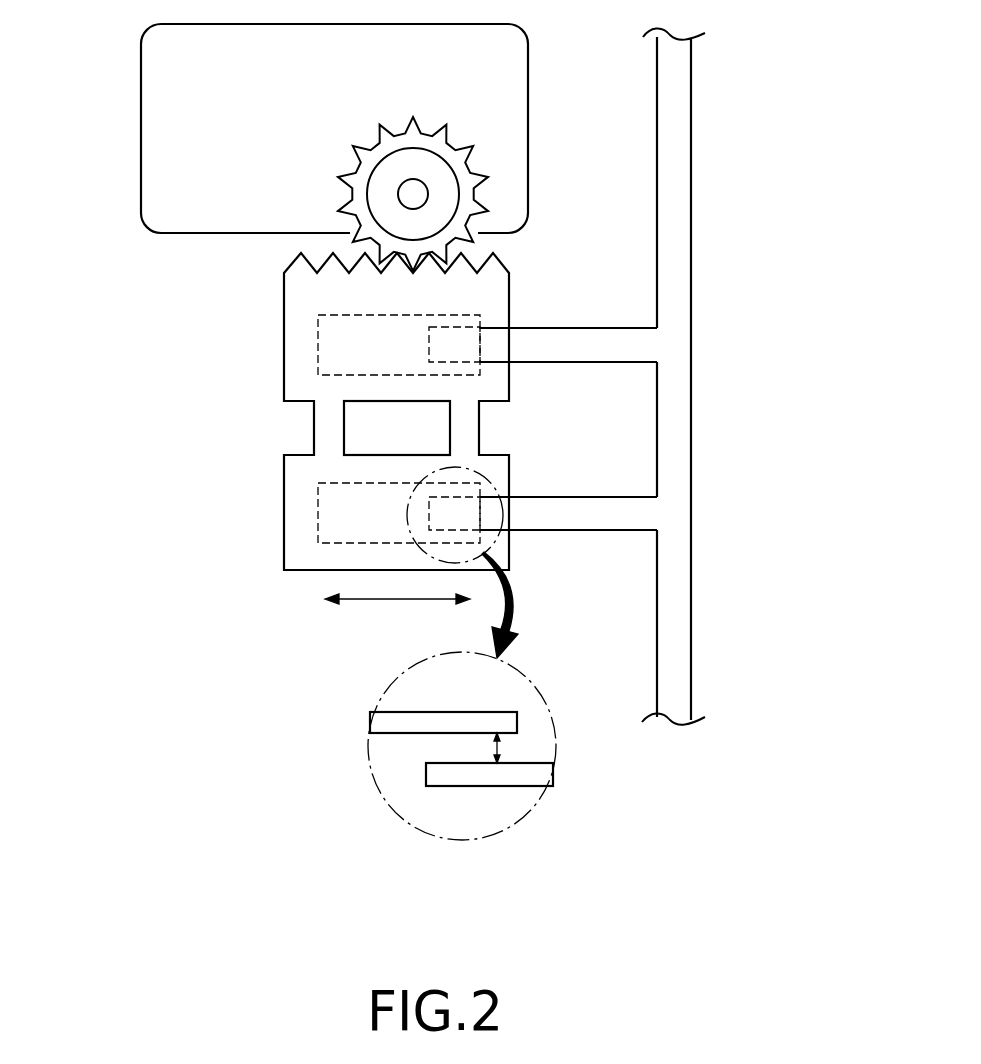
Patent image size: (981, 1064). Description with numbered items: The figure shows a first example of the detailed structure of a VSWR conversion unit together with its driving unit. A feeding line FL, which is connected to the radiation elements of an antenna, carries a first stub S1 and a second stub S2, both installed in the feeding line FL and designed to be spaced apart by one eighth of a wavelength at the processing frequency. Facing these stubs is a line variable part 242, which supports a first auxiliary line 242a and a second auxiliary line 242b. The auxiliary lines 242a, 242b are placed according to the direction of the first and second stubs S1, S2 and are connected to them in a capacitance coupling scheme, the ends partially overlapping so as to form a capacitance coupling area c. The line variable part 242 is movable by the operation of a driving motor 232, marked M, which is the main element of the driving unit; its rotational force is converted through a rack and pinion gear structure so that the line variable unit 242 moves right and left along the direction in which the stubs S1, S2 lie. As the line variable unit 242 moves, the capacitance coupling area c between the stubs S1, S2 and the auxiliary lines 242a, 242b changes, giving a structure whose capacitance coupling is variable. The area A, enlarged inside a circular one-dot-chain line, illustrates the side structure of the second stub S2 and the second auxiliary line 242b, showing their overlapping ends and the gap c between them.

The driving motor 232 is at (288, 147).
The motor M is at (182, 68).
The line variable part 242 is at (284, 463).
The first auxiliary line 242a is at (333, 348).
The second auxiliary line 242b is at (333, 520).
The first stub S1 is at (577, 363).
The second stub S2 is at (582, 532).
The feeding line FL is at (678, 424).
The A area A is at (462, 653).
The capacitance coupling area c is at (488, 748).